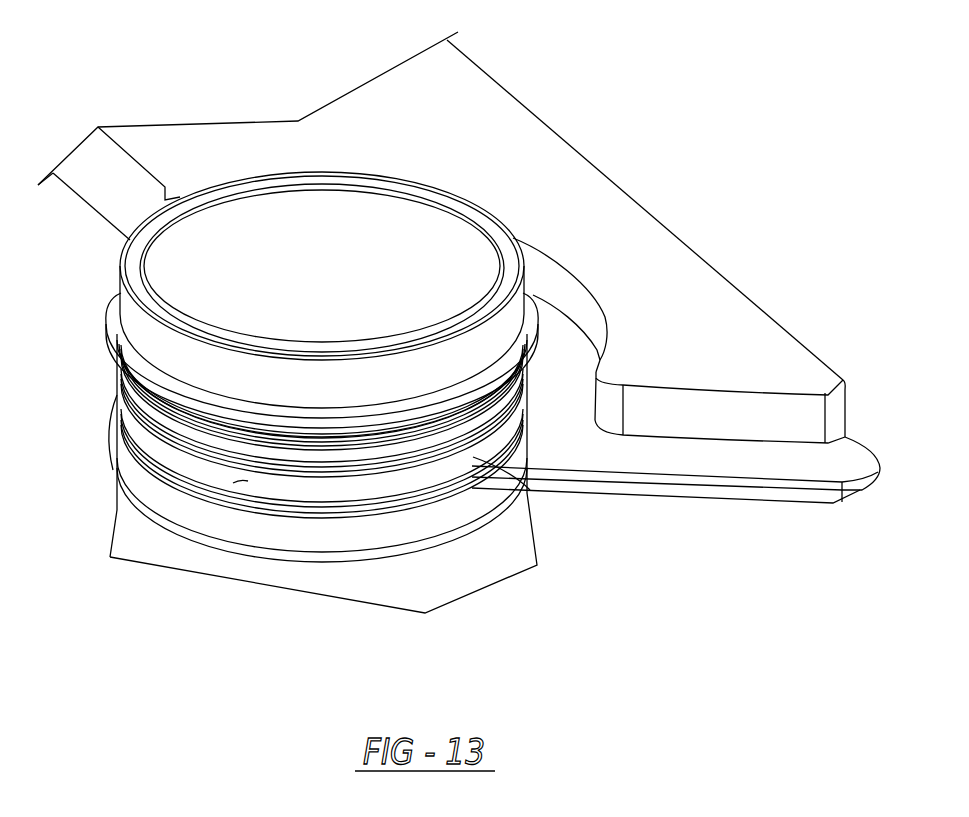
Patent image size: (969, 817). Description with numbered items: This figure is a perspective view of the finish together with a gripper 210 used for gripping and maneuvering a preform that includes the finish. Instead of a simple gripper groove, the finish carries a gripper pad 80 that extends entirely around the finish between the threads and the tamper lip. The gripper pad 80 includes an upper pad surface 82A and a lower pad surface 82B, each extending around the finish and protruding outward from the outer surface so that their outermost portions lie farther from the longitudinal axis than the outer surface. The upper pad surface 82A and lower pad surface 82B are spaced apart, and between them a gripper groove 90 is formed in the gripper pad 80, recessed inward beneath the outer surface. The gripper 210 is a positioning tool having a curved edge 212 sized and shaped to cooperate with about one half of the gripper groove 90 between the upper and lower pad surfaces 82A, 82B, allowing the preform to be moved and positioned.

The gripper 210 is at (531, 163).
The curved edge 212 is at (530, 512).
The gripper pad 80 is at (170, 453).
The upper pad surface 82A is at (374, 492).
The lower pad surface 82B is at (420, 493).
The gripper groove 90 is at (237, 485).